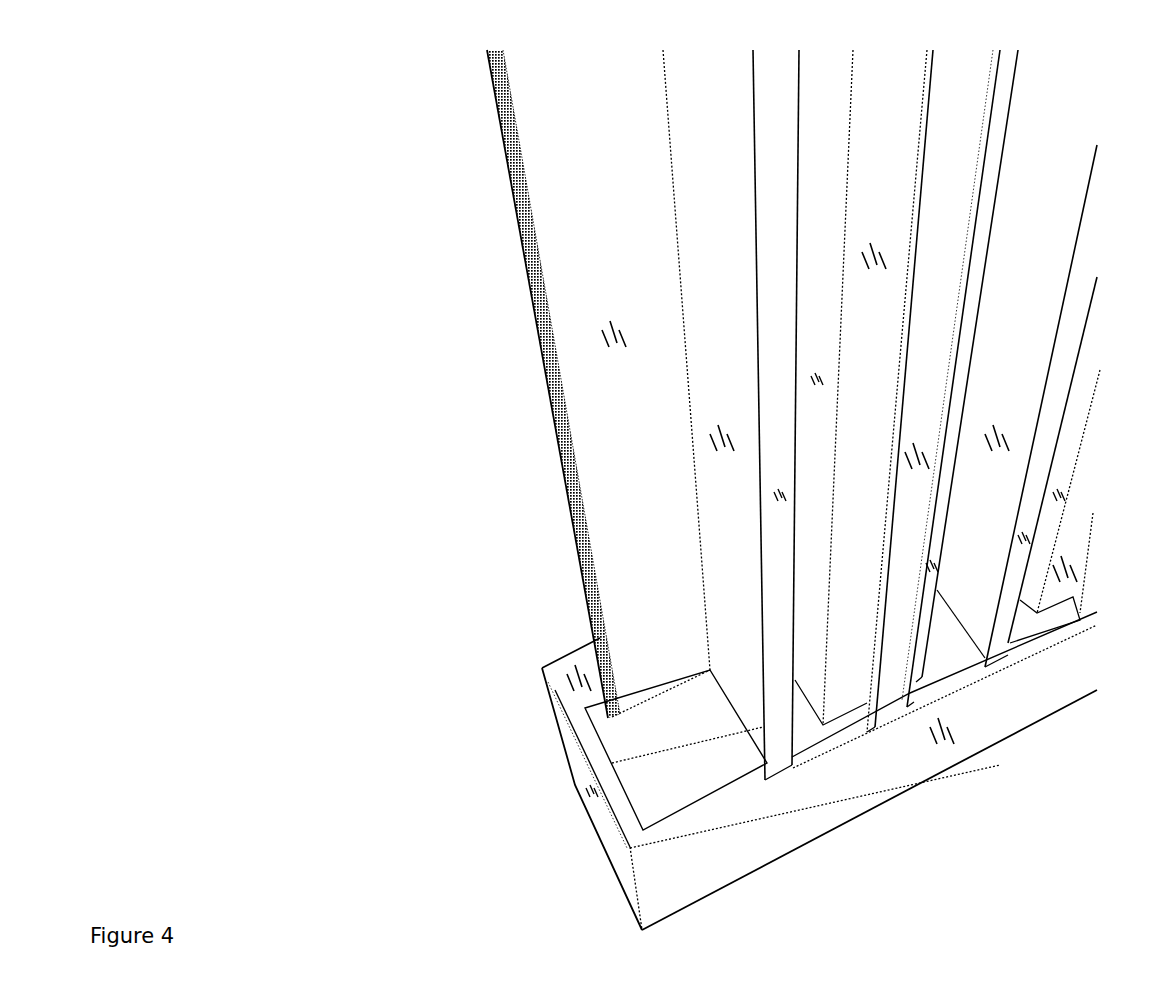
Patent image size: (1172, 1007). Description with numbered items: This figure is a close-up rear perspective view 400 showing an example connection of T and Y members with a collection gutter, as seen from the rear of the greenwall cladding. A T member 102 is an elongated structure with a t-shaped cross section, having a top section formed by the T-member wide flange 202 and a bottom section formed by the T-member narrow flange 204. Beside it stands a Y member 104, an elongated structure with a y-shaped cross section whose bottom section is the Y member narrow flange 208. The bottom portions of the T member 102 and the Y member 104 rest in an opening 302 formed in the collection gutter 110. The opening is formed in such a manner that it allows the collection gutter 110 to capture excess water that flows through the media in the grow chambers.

The close-up rear perspective view of connection of T and Y members with collection 400 is at (250, 217).
The T member 102 is at (615, 450).
The T-member wide flange 202 is at (666, 383).
The T-member narrow flange 204 is at (776, 282).
The Y member 104 is at (885, 712).
The Y member narrow flange 208 is at (948, 228).
The collection gutter 110 is at (573, 767).
The opening 302 is at (676, 750).